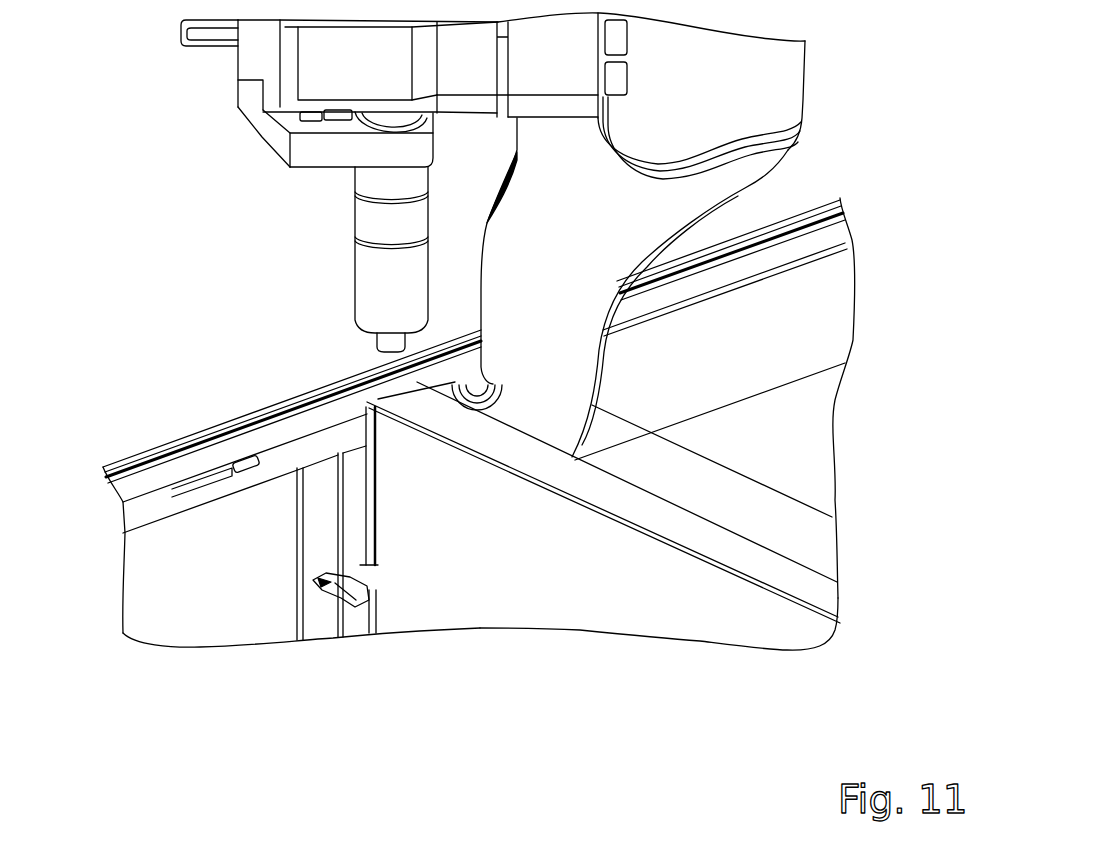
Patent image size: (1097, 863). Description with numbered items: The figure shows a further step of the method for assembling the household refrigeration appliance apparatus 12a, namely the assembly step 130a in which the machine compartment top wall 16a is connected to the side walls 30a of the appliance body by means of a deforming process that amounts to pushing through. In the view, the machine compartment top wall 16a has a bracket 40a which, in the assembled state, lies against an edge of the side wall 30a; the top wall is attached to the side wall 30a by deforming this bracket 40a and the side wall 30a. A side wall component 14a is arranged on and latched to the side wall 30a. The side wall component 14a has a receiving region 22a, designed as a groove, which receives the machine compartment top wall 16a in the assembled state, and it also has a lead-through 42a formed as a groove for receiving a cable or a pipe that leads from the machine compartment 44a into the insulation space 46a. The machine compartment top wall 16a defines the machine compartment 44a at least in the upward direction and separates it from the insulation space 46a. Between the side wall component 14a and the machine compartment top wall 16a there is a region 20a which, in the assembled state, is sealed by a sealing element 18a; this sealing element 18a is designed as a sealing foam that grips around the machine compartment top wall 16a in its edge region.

The connector housing 130a is at (154, 145).
The bracket 40a is at (383, 393).
The side wall 30a is at (285, 437).
The side wall component 14a is at (358, 470).
The sealing element 18a is at (372, 600).
The receiving region 22a is at (313, 578).
The lead-through 42a is at (320, 576).
The region 20a is at (352, 606).
The machine compartment 44a is at (350, 665).
The household refrigeration appliance apparatus 12a is at (576, 648).
The machine compartment top wall 16a is at (685, 597).
The insulation space 46a is at (846, 463).